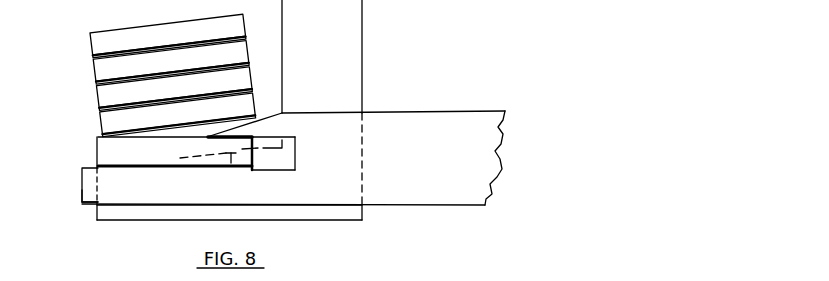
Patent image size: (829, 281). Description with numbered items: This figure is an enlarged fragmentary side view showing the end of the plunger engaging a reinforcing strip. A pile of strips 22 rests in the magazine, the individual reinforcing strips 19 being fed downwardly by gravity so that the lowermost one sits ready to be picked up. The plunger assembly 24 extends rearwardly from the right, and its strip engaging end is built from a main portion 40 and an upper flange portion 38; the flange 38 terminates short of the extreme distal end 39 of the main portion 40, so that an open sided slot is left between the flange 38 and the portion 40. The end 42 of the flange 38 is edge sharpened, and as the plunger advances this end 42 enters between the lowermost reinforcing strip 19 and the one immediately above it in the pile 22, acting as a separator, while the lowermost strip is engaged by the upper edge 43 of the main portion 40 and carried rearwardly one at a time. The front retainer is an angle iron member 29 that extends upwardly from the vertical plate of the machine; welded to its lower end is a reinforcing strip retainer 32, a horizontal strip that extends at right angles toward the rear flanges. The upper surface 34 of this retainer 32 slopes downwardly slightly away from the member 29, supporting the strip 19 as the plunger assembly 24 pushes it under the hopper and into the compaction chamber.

The reinforcing strip 19 is at (182, 69).
The pile of strips 22 is at (233, 58).
The plunger assembly 24 is at (419, 158).
The angle iron member 29 is at (362, 70).
The reinforcing strip retainer 32 is at (231, 166).
The upper surface 34 is at (177, 217).
The upper flange portion 38 is at (294, 113).
The extreme distal end 39 is at (80, 188).
The main portion 40 is at (90, 198).
The end of the flange 42 is at (223, 134).
The upper edge 43 is at (88, 173).